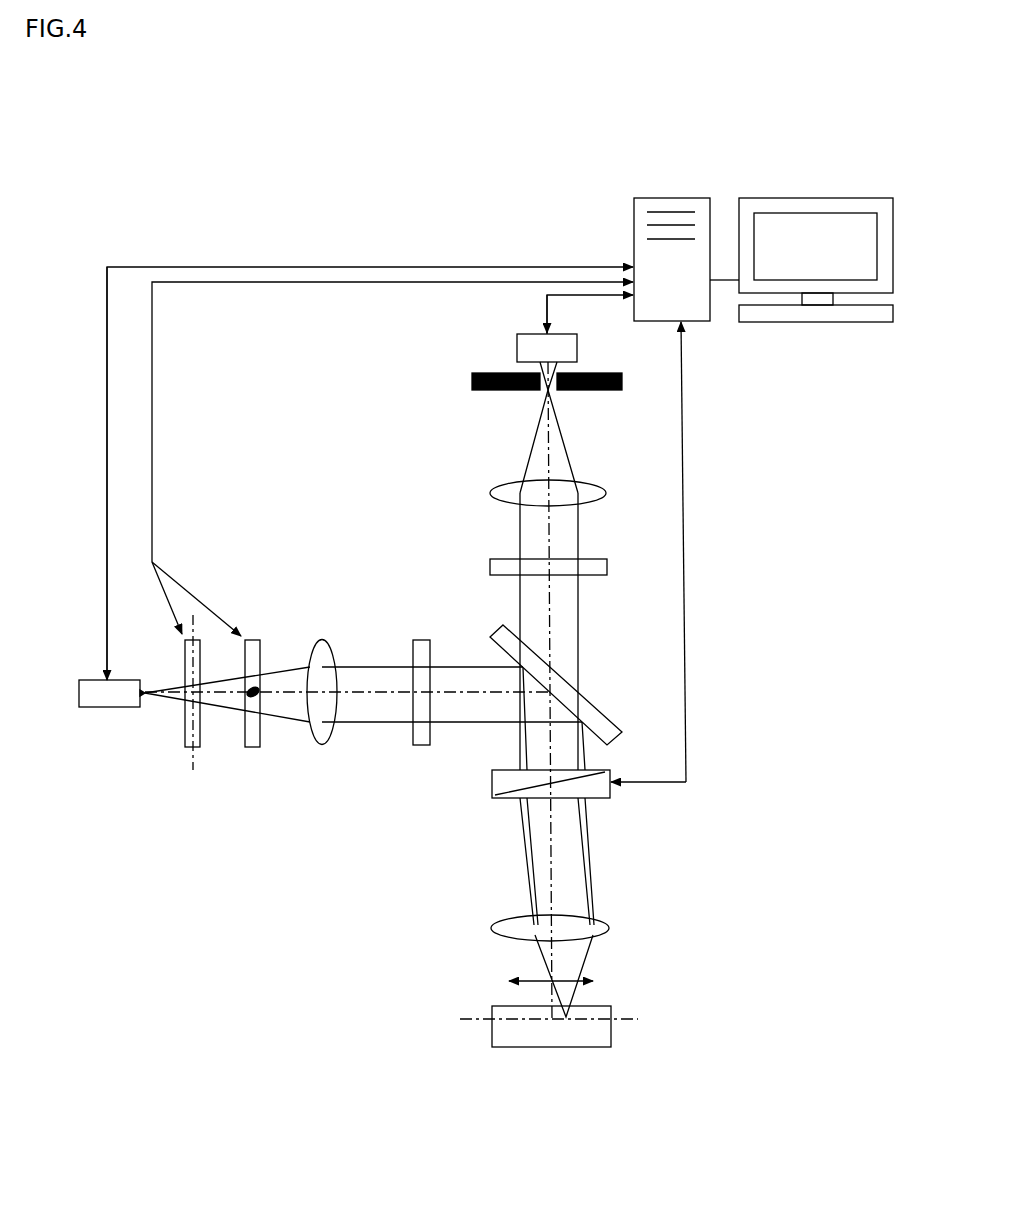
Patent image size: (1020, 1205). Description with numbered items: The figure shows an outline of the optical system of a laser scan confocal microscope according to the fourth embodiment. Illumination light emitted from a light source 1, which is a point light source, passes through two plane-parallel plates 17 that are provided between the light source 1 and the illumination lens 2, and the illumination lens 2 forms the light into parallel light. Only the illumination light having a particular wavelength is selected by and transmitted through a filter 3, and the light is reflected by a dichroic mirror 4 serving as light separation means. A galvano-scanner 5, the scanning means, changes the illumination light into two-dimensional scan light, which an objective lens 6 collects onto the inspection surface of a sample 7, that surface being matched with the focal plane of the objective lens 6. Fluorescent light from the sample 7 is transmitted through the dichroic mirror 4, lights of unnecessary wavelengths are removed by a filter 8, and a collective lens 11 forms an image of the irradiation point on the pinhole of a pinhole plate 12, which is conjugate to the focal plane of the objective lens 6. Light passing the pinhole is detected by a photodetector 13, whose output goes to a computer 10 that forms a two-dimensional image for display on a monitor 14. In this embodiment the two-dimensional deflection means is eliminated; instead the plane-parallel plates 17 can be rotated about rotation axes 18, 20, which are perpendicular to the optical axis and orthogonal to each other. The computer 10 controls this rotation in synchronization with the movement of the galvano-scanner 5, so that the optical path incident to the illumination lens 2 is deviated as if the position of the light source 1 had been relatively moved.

The light source 1 is at (107, 707).
The illumination lens 2 is at (330, 640).
The filter 3 is at (415, 745).
The dichroic mirror 4 is at (500, 632).
The galvano-scanner 5 is at (492, 785).
The objective lens 6 is at (608, 922).
The sample 7 is at (611, 1028).
The filter 8 is at (493, 559).
The computer 10 is at (634, 231).
The collective lens 11 is at (490, 493).
The pinhole plate 12 is at (472, 380).
The photodetector 13 is at (517, 346).
The monitor 14 is at (822, 322).
The plane-parallel plates 17 is at (183, 737).
The rotation axis 18 is at (243, 732).
The rotation axis 20 is at (257, 697).